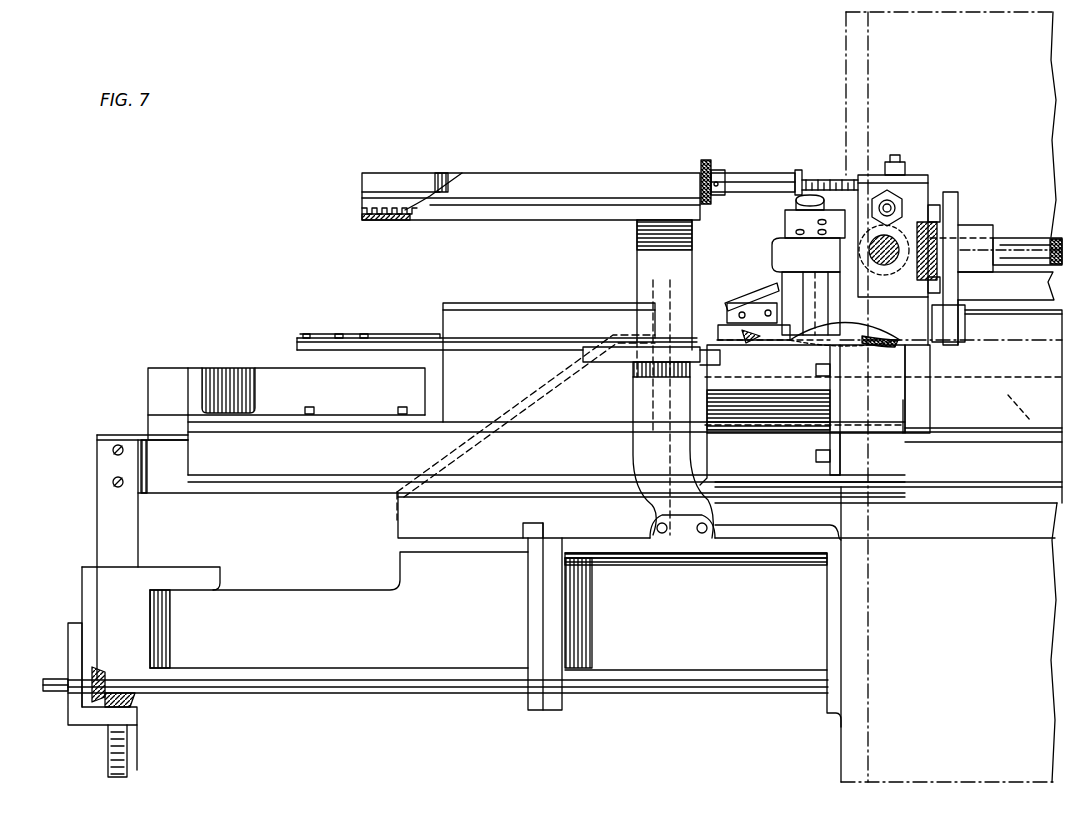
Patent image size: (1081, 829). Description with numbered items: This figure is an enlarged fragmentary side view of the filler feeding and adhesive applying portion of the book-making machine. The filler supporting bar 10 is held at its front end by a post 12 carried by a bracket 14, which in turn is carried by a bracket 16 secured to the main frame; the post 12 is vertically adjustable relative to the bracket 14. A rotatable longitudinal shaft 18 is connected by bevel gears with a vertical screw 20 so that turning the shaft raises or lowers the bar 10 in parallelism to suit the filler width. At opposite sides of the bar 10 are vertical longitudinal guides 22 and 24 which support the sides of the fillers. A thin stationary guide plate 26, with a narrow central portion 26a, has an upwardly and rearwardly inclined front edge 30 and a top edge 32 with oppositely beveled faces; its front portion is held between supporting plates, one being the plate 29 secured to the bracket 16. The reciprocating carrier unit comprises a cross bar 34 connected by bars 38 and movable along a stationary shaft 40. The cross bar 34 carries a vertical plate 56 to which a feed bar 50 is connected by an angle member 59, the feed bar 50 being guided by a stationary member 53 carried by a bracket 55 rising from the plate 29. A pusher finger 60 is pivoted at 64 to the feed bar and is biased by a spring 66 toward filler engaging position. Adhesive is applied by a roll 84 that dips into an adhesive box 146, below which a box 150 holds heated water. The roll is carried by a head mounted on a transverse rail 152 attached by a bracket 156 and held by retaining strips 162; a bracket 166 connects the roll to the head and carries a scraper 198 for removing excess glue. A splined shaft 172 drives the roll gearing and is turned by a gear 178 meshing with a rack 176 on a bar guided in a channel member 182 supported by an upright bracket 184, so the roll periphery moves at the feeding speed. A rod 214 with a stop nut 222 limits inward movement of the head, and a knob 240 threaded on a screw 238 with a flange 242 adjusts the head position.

The bar 10 is at (125, 435).
The post 12 is at (97, 513).
The bracket 14 is at (283, 592).
The bracket 16 is at (676, 609).
The shaft 18 is at (333, 670).
The screw 20 is at (108, 756).
The guide 22 is at (165, 373).
The guide 24 is at (258, 376).
The guide plate 26 is at (398, 517).
The central portion of guide plate 26a is at (1025, 406).
The supporting plate 29 is at (592, 532).
The front edge 30 is at (510, 403).
The top edge 32 is at (660, 340).
The cross bar 34 is at (993, 245).
The bar 38 is at (1040, 292).
The stationary shaft 40 is at (1018, 260).
The feed bar 50 is at (388, 350).
The stationary member 53 is at (622, 360).
The bracket 55 is at (633, 458).
The vertical plate 56 is at (962, 232).
The angle member 59 is at (940, 331).
The finger 60 is at (388, 338).
The pivotal connection 64 is at (362, 334).
The spring 66 is at (347, 336).
The roll 84 is at (878, 326).
The box 146 is at (788, 368).
The box 150 is at (728, 428).
The rail 152 is at (950, 220).
The bracket 156 is at (912, 195).
The retaining strip 162 is at (940, 206).
The bracket 166 is at (780, 270).
The shaft 172 is at (948, 170).
The rack 176 is at (387, 218).
The gear 178 is at (872, 278).
The channel member 182 is at (482, 182).
The upright bracket 184 is at (640, 251).
The scraper 198 is at (738, 303).
The rod 214 is at (887, 190).
The nut 222 is at (890, 235).
The screw 238 is at (800, 172).
The knob 240 is at (705, 160).
The flange 242 is at (795, 172).